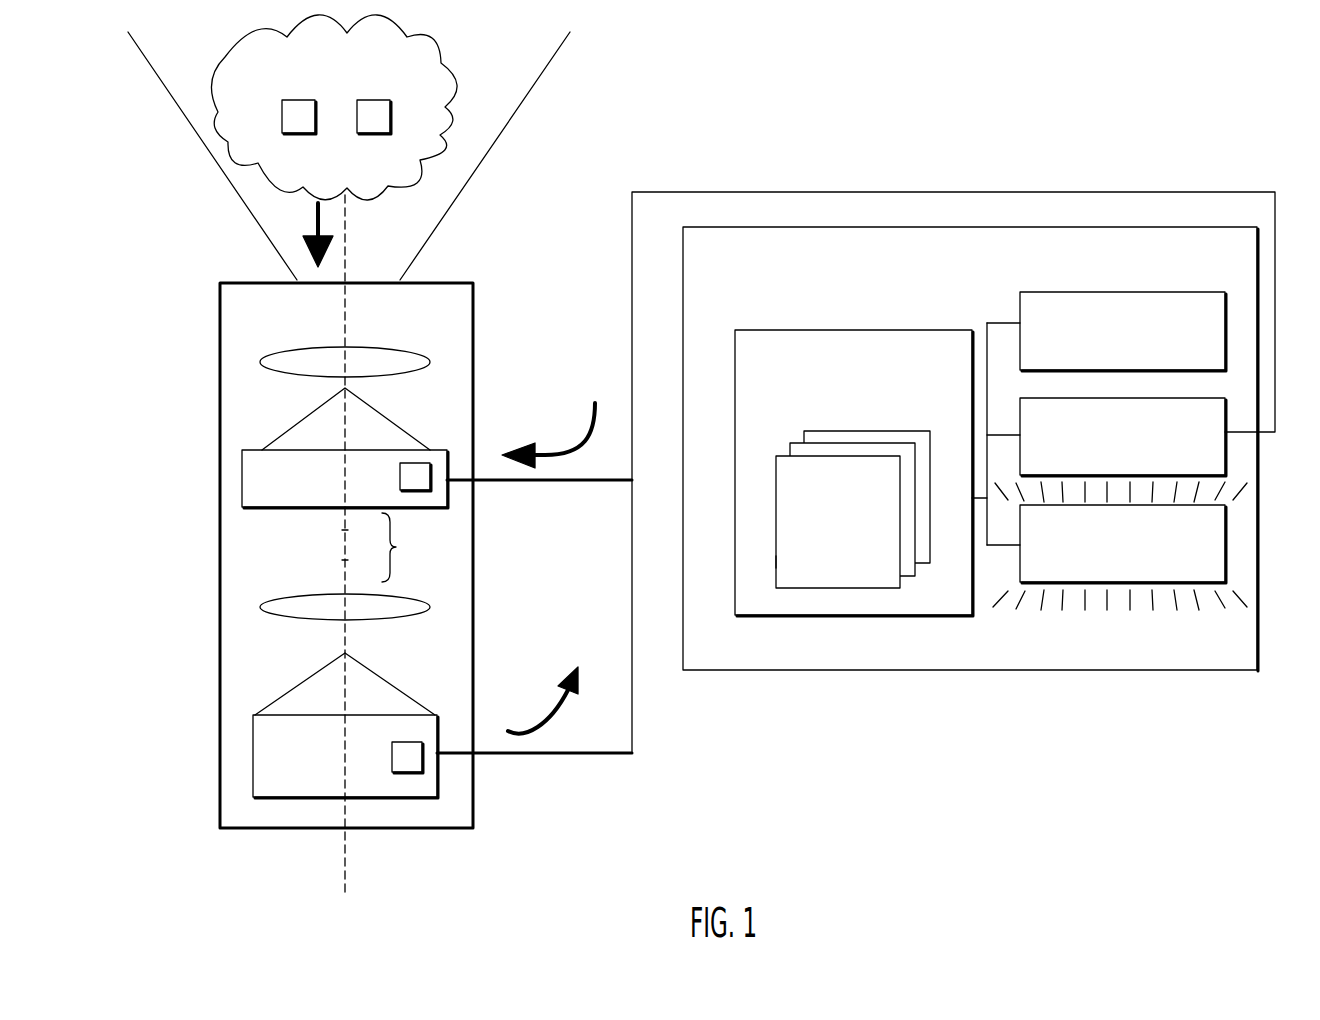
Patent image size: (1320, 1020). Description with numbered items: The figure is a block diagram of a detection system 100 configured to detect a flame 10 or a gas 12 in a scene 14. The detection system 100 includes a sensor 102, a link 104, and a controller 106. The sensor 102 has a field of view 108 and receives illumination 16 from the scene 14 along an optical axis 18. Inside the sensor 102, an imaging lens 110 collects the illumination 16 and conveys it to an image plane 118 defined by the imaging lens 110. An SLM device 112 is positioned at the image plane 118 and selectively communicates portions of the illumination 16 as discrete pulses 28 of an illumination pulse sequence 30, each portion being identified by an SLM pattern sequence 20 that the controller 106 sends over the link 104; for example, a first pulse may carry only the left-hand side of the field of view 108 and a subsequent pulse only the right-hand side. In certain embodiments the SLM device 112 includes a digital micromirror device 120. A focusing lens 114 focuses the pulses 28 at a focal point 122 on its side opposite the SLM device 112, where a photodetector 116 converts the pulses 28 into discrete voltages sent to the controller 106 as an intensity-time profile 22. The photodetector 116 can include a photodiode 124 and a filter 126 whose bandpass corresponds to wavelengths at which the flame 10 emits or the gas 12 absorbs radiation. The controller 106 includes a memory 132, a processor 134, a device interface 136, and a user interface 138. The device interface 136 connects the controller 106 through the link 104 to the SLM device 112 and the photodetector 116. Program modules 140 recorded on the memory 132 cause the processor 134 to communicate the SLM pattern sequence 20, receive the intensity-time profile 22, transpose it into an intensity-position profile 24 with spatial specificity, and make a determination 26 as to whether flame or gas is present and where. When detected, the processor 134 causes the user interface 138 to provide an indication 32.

The flame 10 is at (300, 135).
The gas 12 is at (392, 125).
The scene 14 is at (430, 43).
The illumination 16 is at (313, 227).
The optical axis 18 is at (343, 874).
The SLM pattern sequence 20 is at (557, 452).
The intensity-time profile 22 is at (547, 723).
The intensity-position profile 24 is at (785, 436).
The determination 26 is at (835, 421).
The pulses 28 is at (345, 560).
The illumination pulse sequence 30 is at (399, 547).
The indication 32 is at (1038, 603).
The detection system 100 is at (198, 871).
The sensor 102 is at (220, 308).
The link 104 is at (926, 192).
The controller 106 is at (763, 672).
The field of view 108 is at (193, 133).
The imaging lens 110 is at (391, 348).
The SLM device 112 is at (242, 483).
The focusing lens 114 is at (289, 620).
The photodetector 116 is at (253, 767).
The image plane 118 is at (287, 430).
The digital micromirror device 120 is at (437, 490).
The focal point 122 is at (281, 695).
The photodiode 124 is at (410, 773).
The filter 126 is at (438, 720).
The memory 132 is at (930, 617).
The processor 134 is at (1057, 292).
The device interface 136 is at (1227, 455).
The user interface 138 is at (1227, 558).
The program modules 140 is at (776, 562).